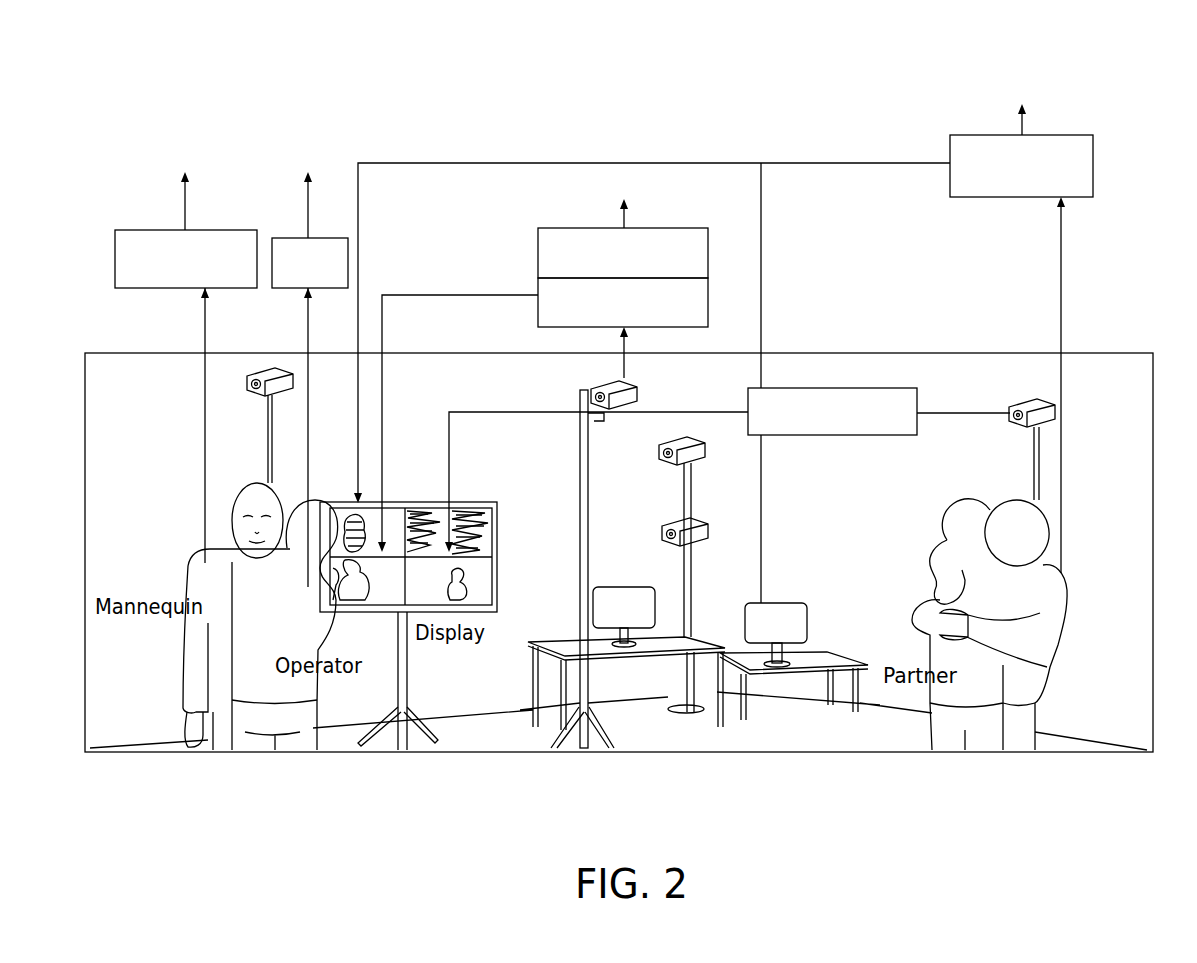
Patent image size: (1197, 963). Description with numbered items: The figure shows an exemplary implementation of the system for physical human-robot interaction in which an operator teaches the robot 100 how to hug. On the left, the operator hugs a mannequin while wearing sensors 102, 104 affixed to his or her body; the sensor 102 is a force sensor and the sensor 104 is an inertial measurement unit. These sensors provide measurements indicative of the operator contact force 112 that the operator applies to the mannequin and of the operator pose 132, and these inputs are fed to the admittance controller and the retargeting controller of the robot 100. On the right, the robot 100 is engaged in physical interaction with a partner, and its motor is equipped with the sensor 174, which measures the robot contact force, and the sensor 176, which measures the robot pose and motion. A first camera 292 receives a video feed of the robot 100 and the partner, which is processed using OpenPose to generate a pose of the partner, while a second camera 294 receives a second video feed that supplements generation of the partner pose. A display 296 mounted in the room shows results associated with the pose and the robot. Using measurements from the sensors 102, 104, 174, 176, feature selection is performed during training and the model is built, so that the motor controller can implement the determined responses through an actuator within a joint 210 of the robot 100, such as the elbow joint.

The robot 100 is at (1043, 621).
The sensor 102 is at (155, 237).
The sensor 104 is at (297, 237).
The operator contact force 112 is at (190, 113).
The operator pose 132 is at (315, 112).
The sensor 174 is at (1007, 77).
The sensor 176 is at (950, 148).
The joint 210 is at (1050, 667).
The first camera 292 is at (708, 278).
The second camera 294 is at (836, 437).
The display 296 is at (497, 580).